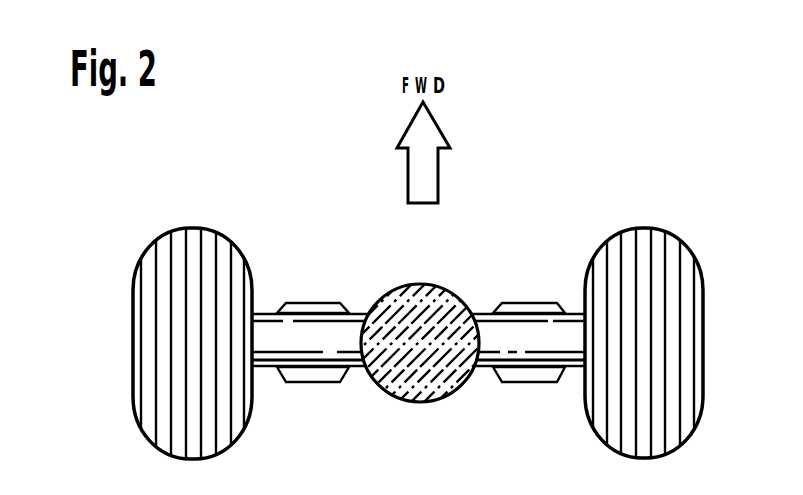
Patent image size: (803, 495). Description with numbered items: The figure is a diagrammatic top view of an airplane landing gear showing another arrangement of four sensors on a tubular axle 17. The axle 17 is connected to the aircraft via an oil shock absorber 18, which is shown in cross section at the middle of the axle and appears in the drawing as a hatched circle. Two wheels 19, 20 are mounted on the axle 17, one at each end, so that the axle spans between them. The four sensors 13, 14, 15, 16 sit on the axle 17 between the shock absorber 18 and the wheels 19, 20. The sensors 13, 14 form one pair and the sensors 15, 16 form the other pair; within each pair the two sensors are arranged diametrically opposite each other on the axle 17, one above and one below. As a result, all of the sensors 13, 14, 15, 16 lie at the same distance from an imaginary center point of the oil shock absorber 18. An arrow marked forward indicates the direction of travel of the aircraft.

The sensor 13 is at (308, 303).
The sensor 14 is at (320, 385).
The sensor 15 is at (532, 303).
The sensor 16 is at (533, 387).
The axle 17 is at (350, 337).
The oil shock absorber 18 is at (417, 391).
The wheel 19 is at (198, 228).
The wheel 20 is at (646, 228).